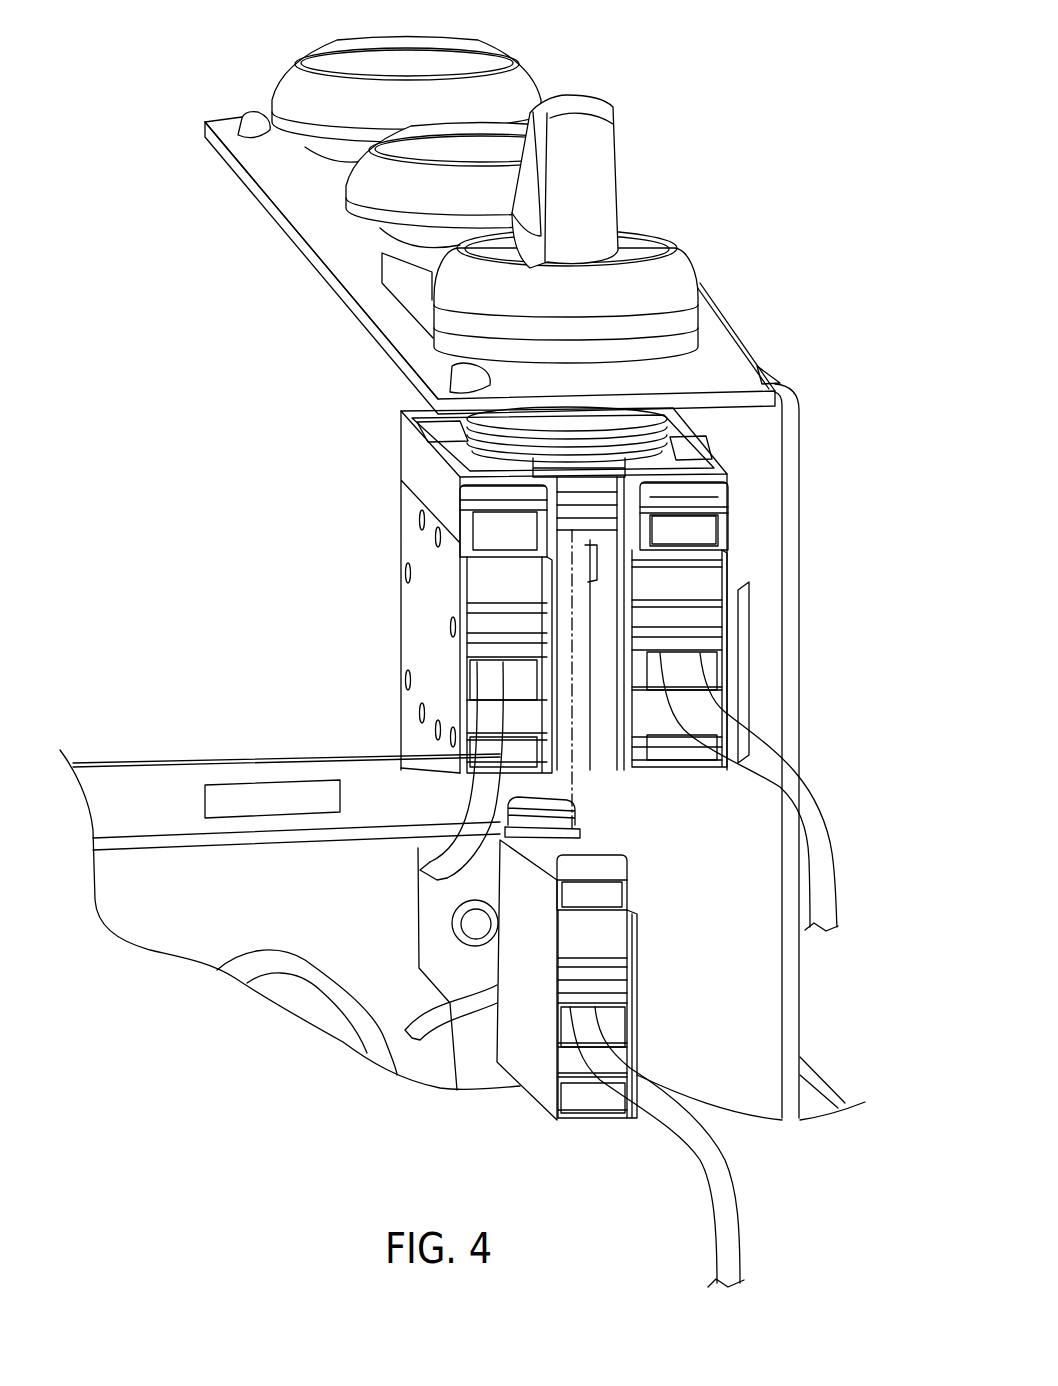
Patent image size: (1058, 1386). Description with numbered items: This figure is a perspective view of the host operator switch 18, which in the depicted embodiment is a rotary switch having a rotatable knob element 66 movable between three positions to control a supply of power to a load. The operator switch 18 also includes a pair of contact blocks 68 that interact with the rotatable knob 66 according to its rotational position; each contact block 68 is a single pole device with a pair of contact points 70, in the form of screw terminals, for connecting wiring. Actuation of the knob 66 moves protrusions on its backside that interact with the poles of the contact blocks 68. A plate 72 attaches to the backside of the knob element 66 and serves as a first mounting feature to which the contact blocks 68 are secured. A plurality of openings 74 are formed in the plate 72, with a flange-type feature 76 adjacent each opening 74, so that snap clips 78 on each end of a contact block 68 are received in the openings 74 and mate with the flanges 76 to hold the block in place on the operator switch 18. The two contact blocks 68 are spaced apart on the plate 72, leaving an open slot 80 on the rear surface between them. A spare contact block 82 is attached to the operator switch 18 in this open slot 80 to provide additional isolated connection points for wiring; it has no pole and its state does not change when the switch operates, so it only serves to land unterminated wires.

The host operator switch 18 is at (245, 341).
The rotatable knob element 66 is at (617, 182).
The contact blocks 68 is at (450, 553).
The contact points 70 is at (477, 684).
The plate 72 is at (705, 455).
The openings 74 is at (471, 484).
The flange-type feature 76 is at (668, 483).
The snap clips 78 is at (683, 518).
The open slot 80 is at (596, 741).
The spare contact block 82 is at (587, 843).